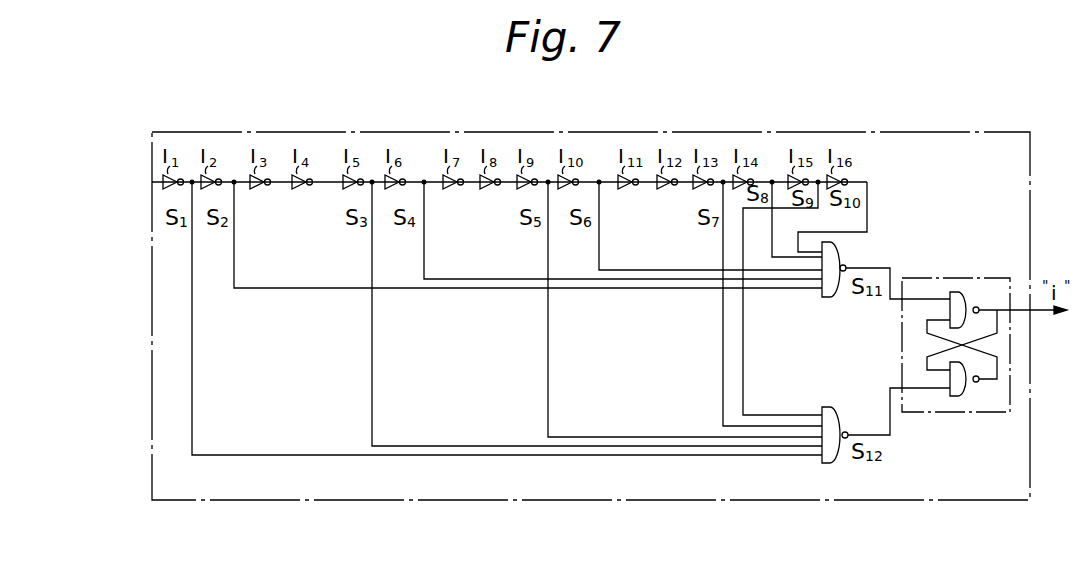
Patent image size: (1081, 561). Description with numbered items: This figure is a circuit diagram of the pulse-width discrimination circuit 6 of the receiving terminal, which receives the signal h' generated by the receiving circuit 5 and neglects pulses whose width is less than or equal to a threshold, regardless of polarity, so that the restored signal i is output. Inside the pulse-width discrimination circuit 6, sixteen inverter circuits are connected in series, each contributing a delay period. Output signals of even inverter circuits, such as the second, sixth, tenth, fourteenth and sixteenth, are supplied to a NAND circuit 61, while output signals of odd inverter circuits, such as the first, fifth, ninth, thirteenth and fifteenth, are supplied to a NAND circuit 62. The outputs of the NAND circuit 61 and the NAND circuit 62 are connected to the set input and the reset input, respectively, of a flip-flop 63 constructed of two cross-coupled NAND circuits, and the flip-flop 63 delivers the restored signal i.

The receiving circuit 5 is at (152, 182).
The pulse-width discrimination circuit 6 is at (931, 132).
The NAND circuit 61 is at (843, 253).
The NAND circuit 62 is at (838, 406).
The flip-flop 63 is at (981, 278).